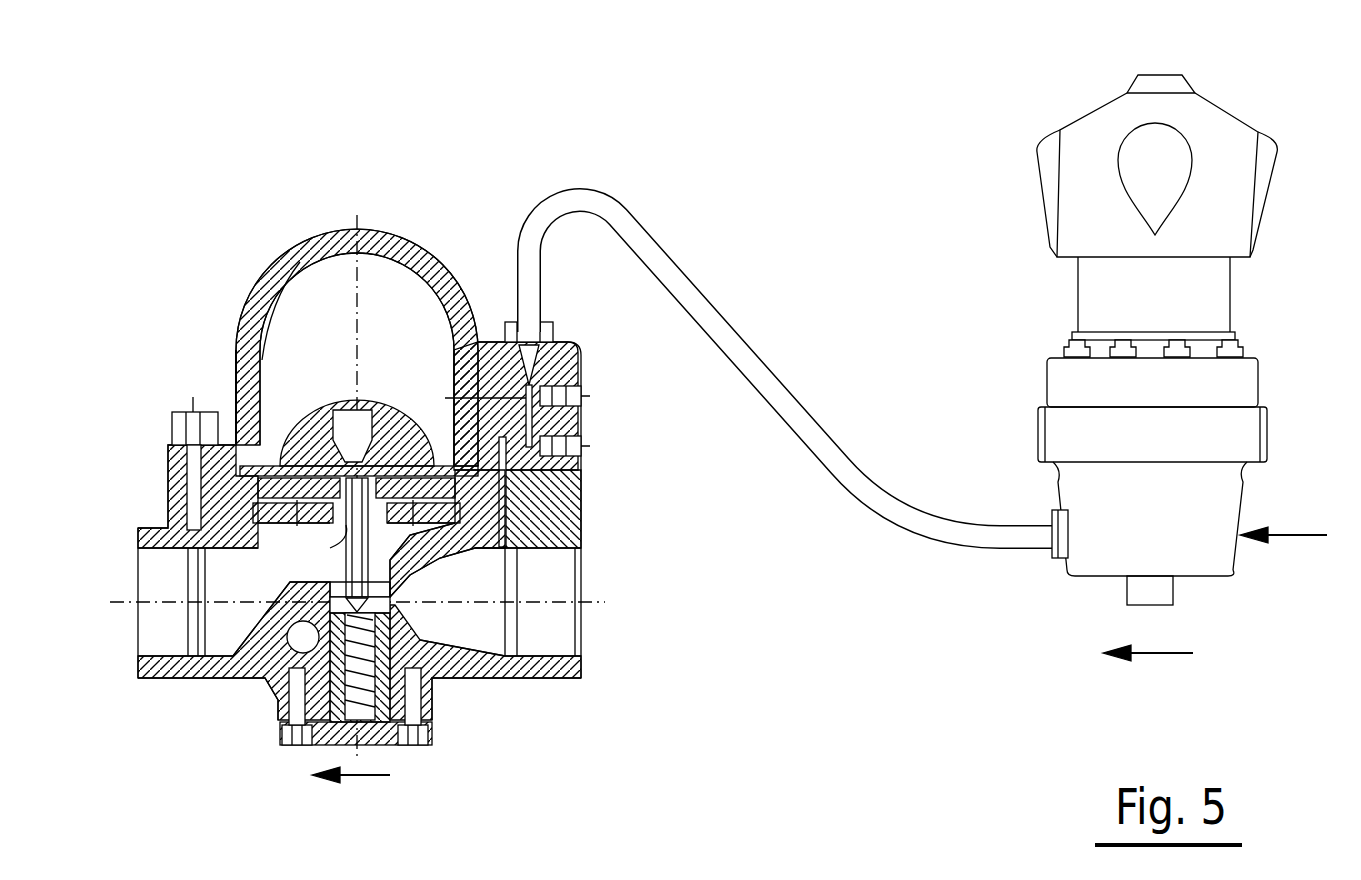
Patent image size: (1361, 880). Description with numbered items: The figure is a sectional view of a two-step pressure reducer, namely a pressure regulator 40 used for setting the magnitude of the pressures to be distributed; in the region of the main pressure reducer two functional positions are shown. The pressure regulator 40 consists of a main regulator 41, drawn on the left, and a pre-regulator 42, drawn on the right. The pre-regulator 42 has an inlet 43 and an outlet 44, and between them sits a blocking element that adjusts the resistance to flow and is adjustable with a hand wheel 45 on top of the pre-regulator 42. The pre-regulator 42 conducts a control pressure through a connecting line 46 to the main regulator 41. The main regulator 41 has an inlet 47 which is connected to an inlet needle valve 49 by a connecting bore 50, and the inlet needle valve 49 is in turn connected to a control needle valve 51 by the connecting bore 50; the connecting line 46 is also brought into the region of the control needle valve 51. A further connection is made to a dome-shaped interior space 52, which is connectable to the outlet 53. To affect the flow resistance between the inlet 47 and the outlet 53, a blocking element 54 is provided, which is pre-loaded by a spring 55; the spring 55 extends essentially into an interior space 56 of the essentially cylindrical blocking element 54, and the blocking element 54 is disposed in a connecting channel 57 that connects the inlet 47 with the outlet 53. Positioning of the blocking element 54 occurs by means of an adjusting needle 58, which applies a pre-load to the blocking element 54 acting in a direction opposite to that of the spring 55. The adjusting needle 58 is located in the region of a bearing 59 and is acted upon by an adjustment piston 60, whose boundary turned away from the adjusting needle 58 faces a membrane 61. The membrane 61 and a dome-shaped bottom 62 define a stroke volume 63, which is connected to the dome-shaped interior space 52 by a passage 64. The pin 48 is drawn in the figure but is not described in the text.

The pressure regulator 40 is at (325, 228).
The main regulator 41 is at (237, 330).
The pre-regulator 42 is at (1076, 296).
The inlet 43 is at (1240, 560).
The outlet 44 is at (1062, 563).
The hand wheel 45 is at (1085, 118).
The connecting line 46 is at (790, 360).
The inlet 47 is at (600, 616).
The connecting pin 48 is at (510, 503).
The inlet needle valve 49 is at (587, 443).
The connecting bore 50 is at (533, 423).
The control needle valve 51 is at (581, 388).
The dome-shaped interior space 52 is at (305, 282).
The outlet 53 is at (148, 577).
The blocking element 54 is at (290, 707).
The spring 55 is at (340, 718).
The interior space 56 is at (395, 747).
The connecting channel 57 is at (380, 622).
The adjusting needle 58 is at (333, 563).
The bearing 59 is at (330, 530).
The adjustment piston 60 is at (410, 453).
The membrane 61 is at (402, 455).
The dome-shaped bottom 62 is at (287, 462).
The stroke volume 63 is at (365, 487).
The passage 64 is at (351, 450).